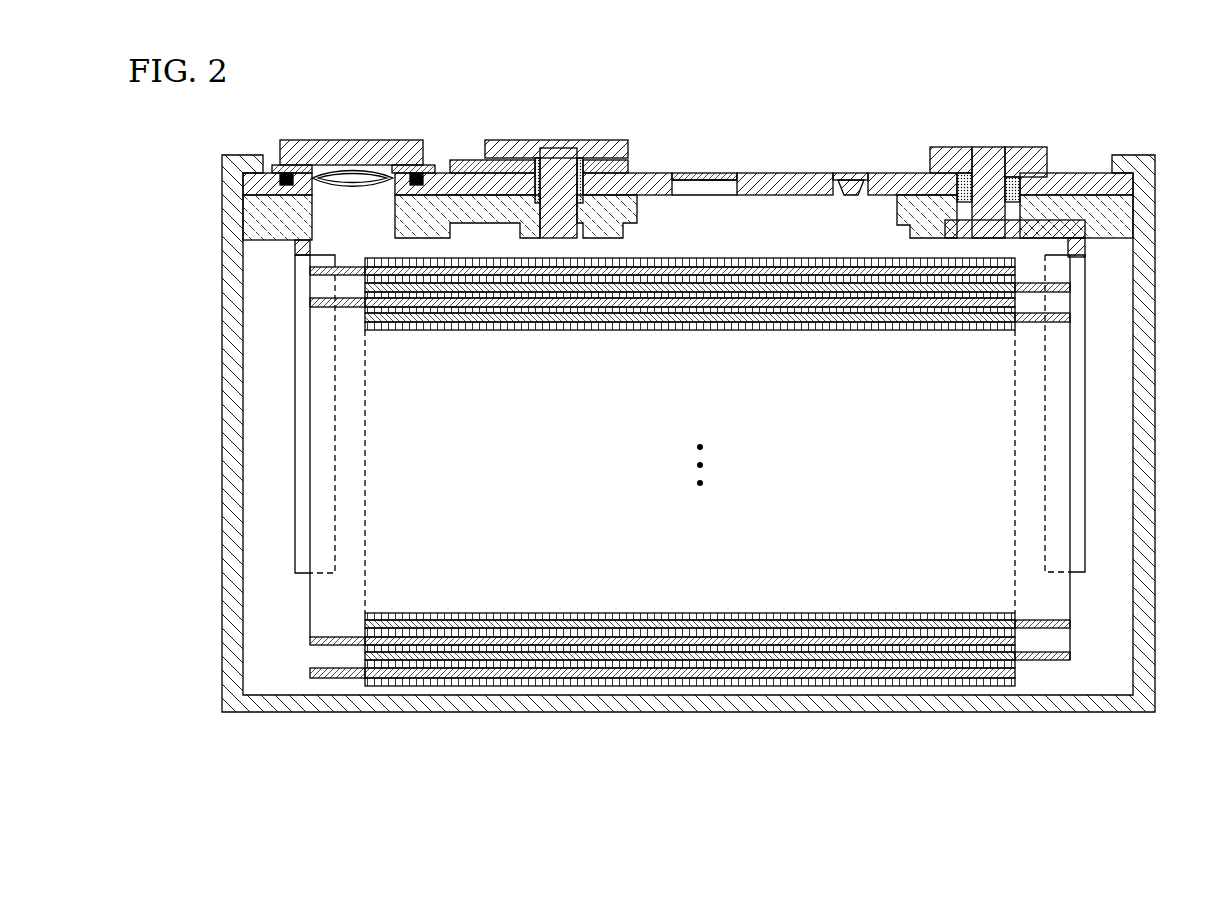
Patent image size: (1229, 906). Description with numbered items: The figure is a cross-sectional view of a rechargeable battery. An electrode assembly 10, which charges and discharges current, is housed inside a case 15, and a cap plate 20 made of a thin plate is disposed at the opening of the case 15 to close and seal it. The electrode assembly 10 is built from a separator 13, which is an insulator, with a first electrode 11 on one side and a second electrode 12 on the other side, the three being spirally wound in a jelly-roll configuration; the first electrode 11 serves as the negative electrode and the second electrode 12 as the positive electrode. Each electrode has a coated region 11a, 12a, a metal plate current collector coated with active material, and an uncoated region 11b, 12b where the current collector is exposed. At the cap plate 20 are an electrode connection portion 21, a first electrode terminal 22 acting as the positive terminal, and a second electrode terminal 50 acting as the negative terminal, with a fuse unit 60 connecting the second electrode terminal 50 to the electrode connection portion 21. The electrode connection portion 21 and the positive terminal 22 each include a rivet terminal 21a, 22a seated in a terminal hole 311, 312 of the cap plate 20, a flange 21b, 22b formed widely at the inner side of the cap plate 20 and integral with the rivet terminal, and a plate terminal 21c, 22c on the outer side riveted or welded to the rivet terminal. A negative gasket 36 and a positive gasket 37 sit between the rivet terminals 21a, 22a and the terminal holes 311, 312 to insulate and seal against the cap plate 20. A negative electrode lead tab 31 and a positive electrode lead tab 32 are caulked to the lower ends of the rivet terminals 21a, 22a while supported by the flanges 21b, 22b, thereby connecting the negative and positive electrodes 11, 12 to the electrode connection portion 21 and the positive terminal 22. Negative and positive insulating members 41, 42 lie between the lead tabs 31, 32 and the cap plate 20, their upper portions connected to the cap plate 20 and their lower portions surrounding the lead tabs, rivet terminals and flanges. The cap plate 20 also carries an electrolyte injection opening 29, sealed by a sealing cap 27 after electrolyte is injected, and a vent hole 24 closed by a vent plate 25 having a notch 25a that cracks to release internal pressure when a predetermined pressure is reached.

The electrode assembly 10 is at (692, 529).
The first electrode 11 is at (662, 532).
The coated region 11a is at (460, 672).
The uncoated region 11b is at (342, 517).
The second electrode 12 is at (720, 541).
The coated region 12a is at (958, 660).
The uncoated region 12b is at (1042, 525).
The separator 13 is at (703, 682).
The case 15 is at (1150, 440).
The cap plate 20 is at (782, 187).
The electrode connection portion 21 is at (542, 165).
The rivet terminal 21a is at (482, 185).
The flange 21b is at (610, 218).
The plate terminal 21c is at (590, 145).
The terminal hole 311 is at (548, 168).
The negative gasket 36 is at (583, 183).
The first electrode terminal 22 is at (1055, 187).
The rivet terminal 22a is at (995, 238).
The flange 22b is at (947, 212).
The plate terminal 22c is at (1047, 157).
The terminal hole 312 is at (1012, 185).
The positive gasket 37 is at (968, 185).
The vent hole 24 is at (718, 190).
The vent plate 25 is at (730, 173).
The notch 25a is at (705, 178).
The sealing cap 27 is at (852, 173).
The electrolyte injection opening 29 is at (850, 196).
The negative electrode lead tab 31 is at (298, 404).
The positive electrode lead tab 32 is at (1078, 525).
The negative insulating member 41 is at (255, 213).
The positive insulating member 42 is at (1135, 207).
The second electrode terminal 50 is at (355, 133).
The fuse unit 60 is at (445, 162).